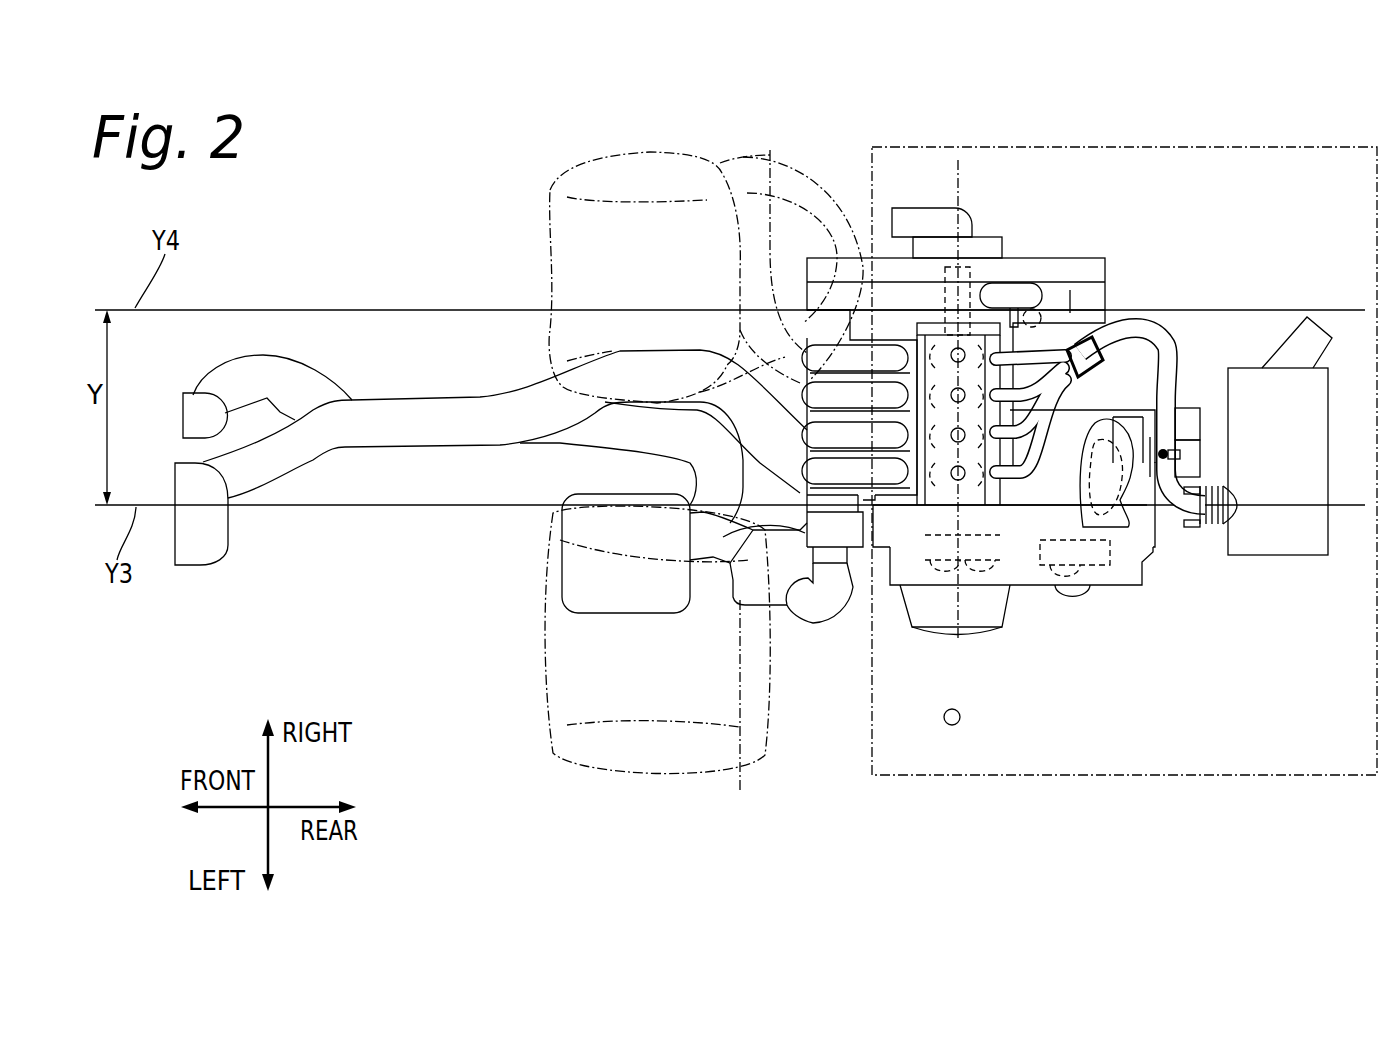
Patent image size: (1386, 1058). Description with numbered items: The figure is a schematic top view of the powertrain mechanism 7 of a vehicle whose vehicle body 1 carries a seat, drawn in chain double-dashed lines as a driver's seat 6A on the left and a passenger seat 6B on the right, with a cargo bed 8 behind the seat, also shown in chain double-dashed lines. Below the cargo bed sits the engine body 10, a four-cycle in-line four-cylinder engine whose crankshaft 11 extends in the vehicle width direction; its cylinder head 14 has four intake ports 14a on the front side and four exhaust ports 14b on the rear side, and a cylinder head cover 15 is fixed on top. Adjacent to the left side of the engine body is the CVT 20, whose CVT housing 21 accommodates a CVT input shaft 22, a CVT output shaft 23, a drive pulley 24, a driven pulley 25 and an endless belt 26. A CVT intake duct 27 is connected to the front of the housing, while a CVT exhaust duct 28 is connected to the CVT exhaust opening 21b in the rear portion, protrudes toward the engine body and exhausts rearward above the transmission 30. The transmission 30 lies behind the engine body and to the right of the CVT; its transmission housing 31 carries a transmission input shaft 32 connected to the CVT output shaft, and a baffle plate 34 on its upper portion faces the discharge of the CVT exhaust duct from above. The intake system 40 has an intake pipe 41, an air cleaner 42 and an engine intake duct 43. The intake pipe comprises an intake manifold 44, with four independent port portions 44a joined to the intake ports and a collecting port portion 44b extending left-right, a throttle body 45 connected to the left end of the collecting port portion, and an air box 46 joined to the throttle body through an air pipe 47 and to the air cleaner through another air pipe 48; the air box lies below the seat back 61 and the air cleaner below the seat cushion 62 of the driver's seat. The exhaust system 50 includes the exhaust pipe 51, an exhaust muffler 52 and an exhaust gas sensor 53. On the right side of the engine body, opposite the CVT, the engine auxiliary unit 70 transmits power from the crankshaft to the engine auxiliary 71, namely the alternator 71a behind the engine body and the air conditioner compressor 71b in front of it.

The vehicle body 1 is at (960, 719).
The driver's seat 6A is at (530, 640).
The passenger seat 6B is at (530, 238).
The powertrain mechanism 7 is at (391, 351).
The cargo bed 8 is at (1038, 776).
The engine body 10 is at (900, 295).
The crankshaft 11 is at (960, 308).
The cylinder head 14 is at (977, 317).
The intake ports 14a is at (957, 510).
The exhaust ports 14b is at (980, 510).
The cylinder head cover 15 is at (910, 298).
The CVT 20 is at (1106, 605).
The CVT housing 21 is at (1150, 585).
The CVT exhaust opening 21b is at (1148, 578).
The CVT input shaft 22 is at (960, 592).
The CVT output shaft 23 is at (1062, 593).
The drive pulley 24 is at (983, 603).
The driven pulley 25 is at (1100, 590).
The endless belt 26 is at (987, 603).
The CVT intake duct 27 is at (297, 462).
The CVT exhaust duct 28 is at (1157, 504).
The transmission 30 is at (1180, 407).
The transmission housing 31 is at (1080, 348).
The transmission input shaft 32 is at (1070, 430).
The baffle plate 34 is at (1123, 418).
The intake system 40 is at (526, 458).
The intake pipe 41 is at (714, 612).
The air cleaner 42 is at (562, 522).
The engine intake duct 43 is at (637, 433).
The intake manifold 44 is at (783, 82).
The independent port portions 44a is at (785, 345).
The collecting port portion 44b is at (737, 347).
The throttle body 45 is at (840, 537).
The air box 46 is at (740, 615).
The air pipe 47 is at (800, 620).
The air pipe 48 is at (717, 523).
The exhaust system 50 is at (1235, 346).
The exhaust pipe 51 is at (1157, 332).
The exhaust muffler 52 is at (1293, 475).
The exhaust gas sensor 53 is at (1180, 453).
The seat back 61 is at (777, 606).
The seat cushion 62 is at (586, 763).
The engine auxiliary unit 70 is at (1101, 228).
The engine auxiliary 71 is at (1033, 263).
The alternator 71a is at (908, 207).
The air conditioner compressor 71b is at (1043, 290).